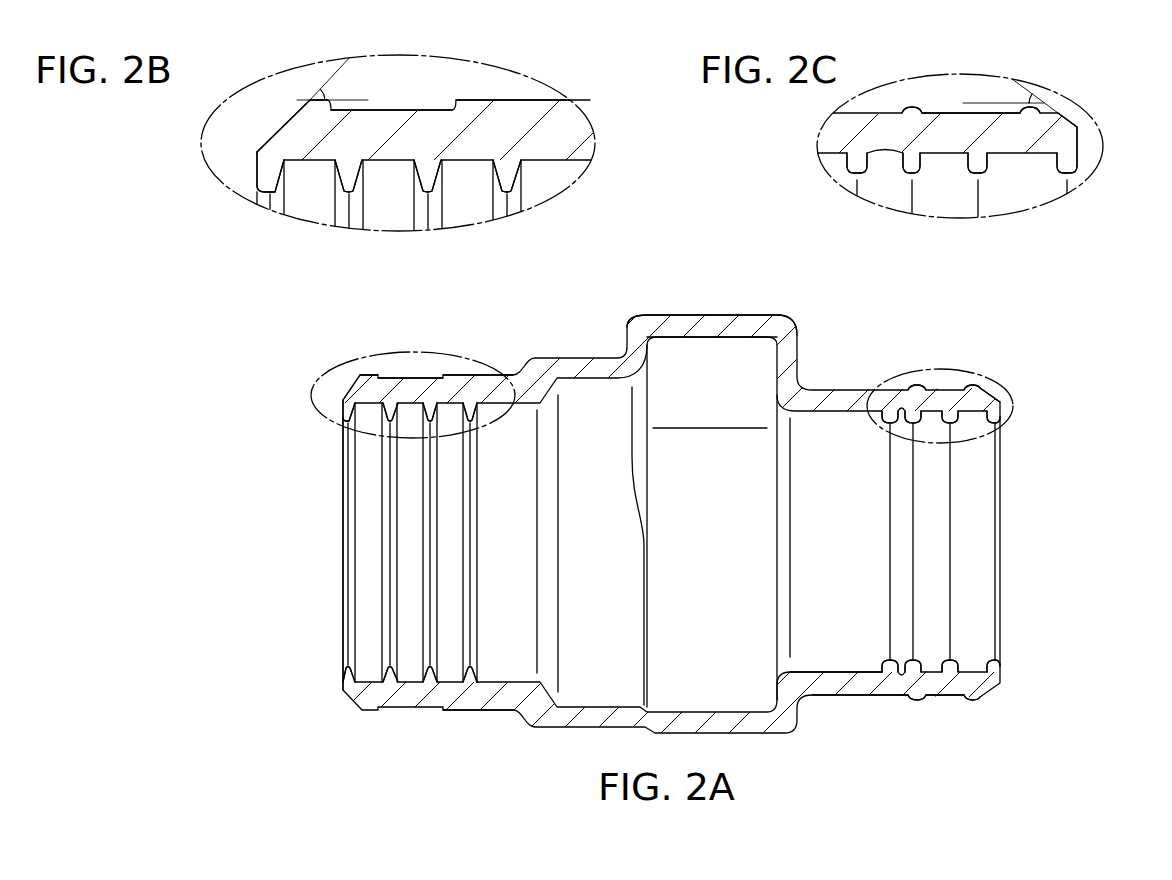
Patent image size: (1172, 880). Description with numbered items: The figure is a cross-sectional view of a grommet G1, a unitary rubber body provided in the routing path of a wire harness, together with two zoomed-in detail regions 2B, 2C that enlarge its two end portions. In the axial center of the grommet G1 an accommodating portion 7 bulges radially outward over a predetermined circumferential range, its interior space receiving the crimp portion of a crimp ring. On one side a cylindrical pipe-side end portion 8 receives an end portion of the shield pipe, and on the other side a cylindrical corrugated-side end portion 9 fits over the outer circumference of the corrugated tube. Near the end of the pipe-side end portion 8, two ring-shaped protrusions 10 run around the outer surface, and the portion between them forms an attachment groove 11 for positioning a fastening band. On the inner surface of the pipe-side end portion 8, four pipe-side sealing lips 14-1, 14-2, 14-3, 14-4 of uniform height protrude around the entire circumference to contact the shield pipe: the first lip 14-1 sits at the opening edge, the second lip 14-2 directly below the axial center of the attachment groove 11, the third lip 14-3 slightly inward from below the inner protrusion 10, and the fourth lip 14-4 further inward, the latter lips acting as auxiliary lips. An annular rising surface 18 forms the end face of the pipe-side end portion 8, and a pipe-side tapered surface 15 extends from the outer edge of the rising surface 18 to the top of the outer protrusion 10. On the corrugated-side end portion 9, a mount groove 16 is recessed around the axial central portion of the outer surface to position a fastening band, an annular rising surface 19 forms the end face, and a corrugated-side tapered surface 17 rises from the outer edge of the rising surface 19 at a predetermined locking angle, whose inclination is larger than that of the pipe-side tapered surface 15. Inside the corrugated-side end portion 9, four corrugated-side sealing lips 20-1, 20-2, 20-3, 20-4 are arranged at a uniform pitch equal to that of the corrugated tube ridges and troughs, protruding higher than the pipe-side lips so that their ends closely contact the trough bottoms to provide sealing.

In FIG. 2A, the accommodating portion 7 is at (686, 322).
In FIG. 2A, the grommet G1 is at (757, 310).
In FIG. 2A, the pipe-side end portion 8 is at (830, 690).
In FIG. 2A, the corrugated-side end portion 9 is at (510, 703).
In FIG. 2B, the corrugated-side end portion 9 is at (508, 108).
In FIG. 2A, the protrusion 10 is at (915, 699).
In FIG. 2C, the protrusion 10 is at (912, 107).
In FIG. 2A, the attachment groove 11 is at (950, 693).
In FIG. 2C, the attachment groove 11 is at (932, 113).
In FIG. 2A, the first lip 14-1 is at (999, 663).
In FIG. 2C, the first lip 14-1 is at (1072, 161).
In FIG. 2A, the second lip 14-2 is at (955, 667).
In FIG. 2C, the second lip 14-2 is at (985, 168).
In FIG. 2A, the third lip 14-3 is at (913, 670).
In FIG. 2C, the third lip 14-3 is at (912, 167).
In FIG. 2A, the fourth lip 14-4 is at (890, 670).
In FIG. 2C, the fourth lip 14-4 is at (858, 167).
In FIG. 2A, the pipe-side tapered surface 15 is at (985, 392).
In FIG. 2C, the pipe-side tapered surface 15 is at (1048, 117).
In FIG. 2A, the mount groove 16 is at (424, 378).
In FIG. 2B, the mount groove 16 is at (398, 110).
In FIG. 2A, the corrugated-side tapered surface 17 is at (351, 388).
In FIG. 2B, the corrugated-side tapered surface 17 is at (275, 122).
In FIG. 2C, the rising surface 18 is at (1079, 150).
In FIG. 2A, the rising surface 19 is at (343, 683).
In FIG. 2B, the rising surface 19 is at (257, 153).
In FIG. 2A, the corrugated-side sealing lip 20-1 is at (350, 677).
In FIG. 2B, the corrugated-side sealing lip 20-1 is at (272, 178).
In FIG. 2A, the corrugated-side sealing lip 20-2 is at (388, 677).
In FIG. 2B, the corrugated-side sealing lip 20-2 is at (347, 177).
In FIG. 2A, the corrugated-side sealing lip 20-3 is at (429, 677).
In FIG. 2B, the corrugated-side sealing lip 20-3 is at (428, 173).
In FIG. 2A, the corrugated-side sealing lip 20-4 is at (468, 677).
In FIG. 2B, the corrugated-side sealing lip 20-4 is at (510, 173).
In FIG. 2A, the zoomed-in view portion 2B is at (312, 398).
In FIG. 2A, the zoomed-in view portion 2C is at (1014, 410).